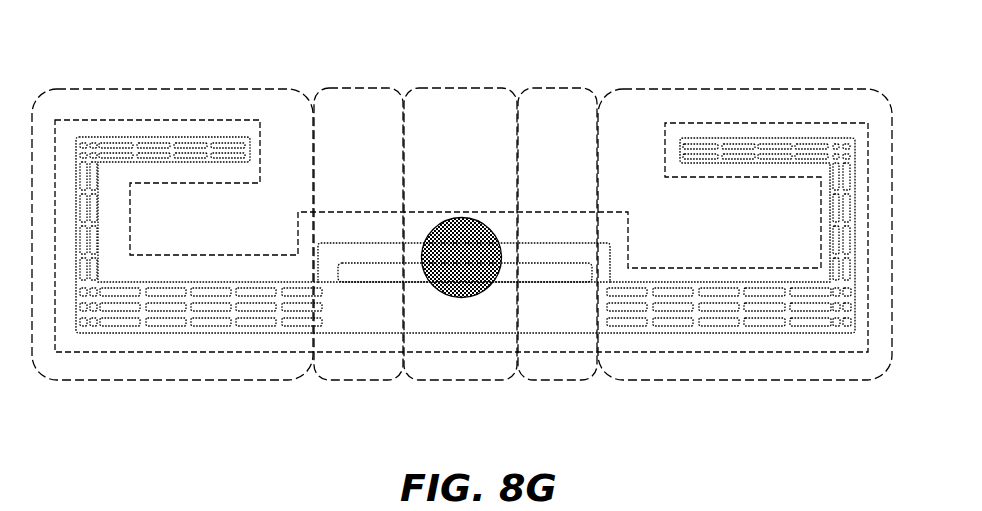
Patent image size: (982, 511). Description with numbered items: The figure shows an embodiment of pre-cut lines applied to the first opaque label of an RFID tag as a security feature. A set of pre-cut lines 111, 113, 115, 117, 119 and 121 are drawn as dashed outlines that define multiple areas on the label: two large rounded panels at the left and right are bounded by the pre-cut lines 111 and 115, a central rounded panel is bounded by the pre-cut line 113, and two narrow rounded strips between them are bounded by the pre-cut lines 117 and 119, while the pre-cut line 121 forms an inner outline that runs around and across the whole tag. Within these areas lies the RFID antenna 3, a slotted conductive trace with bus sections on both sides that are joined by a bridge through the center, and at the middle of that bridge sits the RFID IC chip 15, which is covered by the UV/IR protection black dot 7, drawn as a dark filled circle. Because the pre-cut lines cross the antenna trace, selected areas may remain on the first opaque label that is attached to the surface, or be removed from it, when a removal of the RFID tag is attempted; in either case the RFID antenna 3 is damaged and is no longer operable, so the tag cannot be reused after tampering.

The pre-cut line 111 is at (158, 89).
The pre-cut line 113 is at (462, 89).
The pre-cut line 115 is at (772, 89).
The pre-cut line 117 is at (343, 381).
The pre-cut line 119 is at (568, 381).
The pre-cut line 121 is at (720, 354).
The RFID antenna 3 is at (789, 334).
The RFID IC chip 15 is at (452, 217).
The UV/IR protection black dot 7 is at (436, 220).